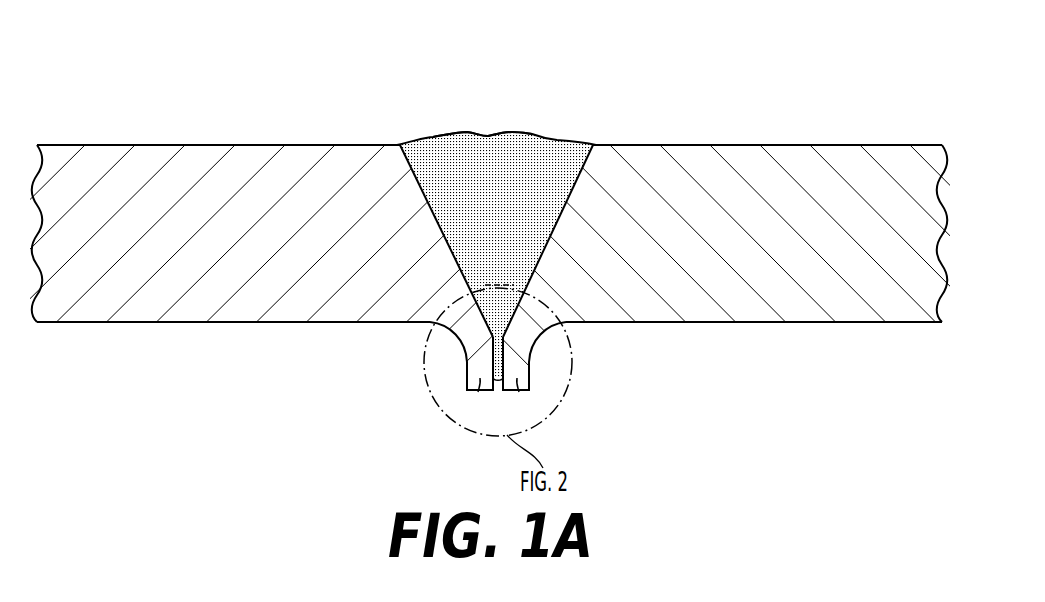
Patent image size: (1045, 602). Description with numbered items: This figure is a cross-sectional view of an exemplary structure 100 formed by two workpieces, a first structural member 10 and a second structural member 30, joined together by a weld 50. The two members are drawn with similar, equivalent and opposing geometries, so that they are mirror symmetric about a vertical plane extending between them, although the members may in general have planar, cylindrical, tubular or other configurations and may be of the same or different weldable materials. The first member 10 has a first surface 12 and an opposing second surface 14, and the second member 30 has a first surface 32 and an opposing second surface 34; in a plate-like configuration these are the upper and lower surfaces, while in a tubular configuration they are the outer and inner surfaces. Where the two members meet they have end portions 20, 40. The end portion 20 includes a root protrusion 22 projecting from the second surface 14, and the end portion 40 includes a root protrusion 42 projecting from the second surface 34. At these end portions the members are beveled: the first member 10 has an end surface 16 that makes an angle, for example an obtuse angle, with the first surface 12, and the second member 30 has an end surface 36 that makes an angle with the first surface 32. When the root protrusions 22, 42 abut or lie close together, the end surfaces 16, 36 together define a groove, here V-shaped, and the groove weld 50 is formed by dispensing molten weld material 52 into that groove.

The structure 100 is at (172, 42).
The first structural member 10 is at (246, 251).
The first surface 12 is at (183, 145).
The second surface 14 is at (183, 322).
The end surface 16 is at (408, 143).
The end portion 20 is at (405, 394).
The root protrusion 22 is at (478, 392).
The second structural member 30 is at (735, 246).
The first surface 32 is at (773, 145).
The second surface 34 is at (772, 322).
The end surface 36 is at (588, 144).
The end portion 40 is at (592, 394).
The root protrusion 42 is at (519, 392).
The weld 50 is at (505, 127).
The molten weld material 52 is at (536, 134).